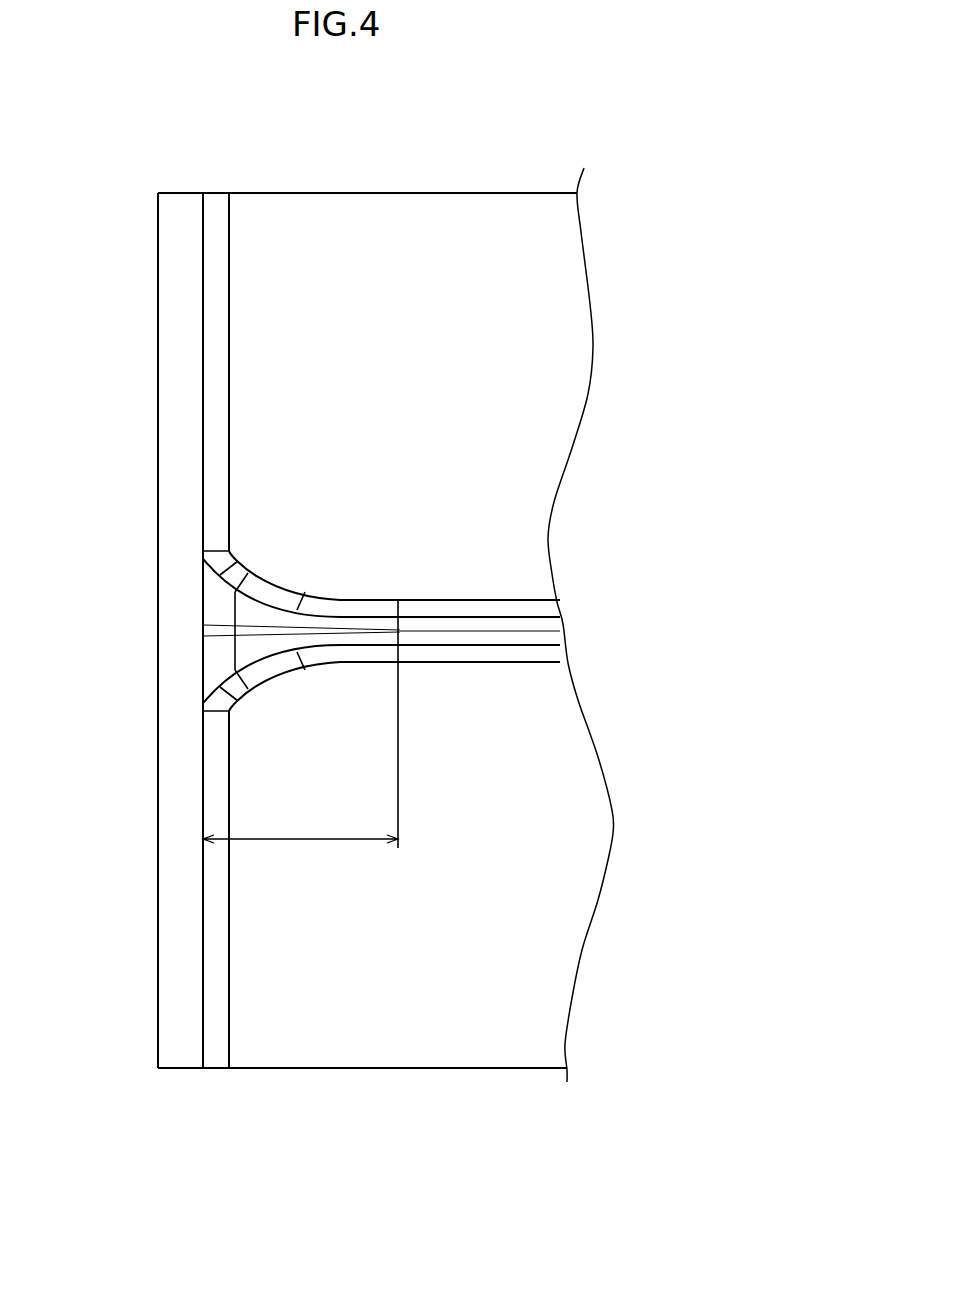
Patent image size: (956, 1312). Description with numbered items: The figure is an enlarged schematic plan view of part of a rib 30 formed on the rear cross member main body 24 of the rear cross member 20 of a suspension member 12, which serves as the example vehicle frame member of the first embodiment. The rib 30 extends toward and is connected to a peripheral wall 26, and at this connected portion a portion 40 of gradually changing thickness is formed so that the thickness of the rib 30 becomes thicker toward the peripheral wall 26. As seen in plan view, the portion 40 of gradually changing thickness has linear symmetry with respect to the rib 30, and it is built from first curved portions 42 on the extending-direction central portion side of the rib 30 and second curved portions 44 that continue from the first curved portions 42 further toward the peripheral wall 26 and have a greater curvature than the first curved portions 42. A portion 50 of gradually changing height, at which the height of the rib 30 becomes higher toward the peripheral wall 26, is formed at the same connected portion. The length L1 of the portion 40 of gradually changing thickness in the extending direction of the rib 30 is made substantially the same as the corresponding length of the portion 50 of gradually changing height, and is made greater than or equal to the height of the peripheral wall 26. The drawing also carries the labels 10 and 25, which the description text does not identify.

The nozzle 10 is at (373, 582).
The suspension member 12 is at (130, 162).
The rear cross member 20 is at (337, 192).
The rear cross member main body 24 is at (493, 193).
The second surface 25 is at (357, 1053).
The peripheral wall 26 is at (172, 947).
The rib 30 is at (500, 600).
The portion of gradually changing thickness 40 is at (308, 555).
The first curved portions 42 is at (305, 592).
The second curved portions 44 is at (238, 561).
The portion of gradually changing height 50 is at (206, 631).
The length of the portion of gradually changing thickness L1 is at (297, 839).